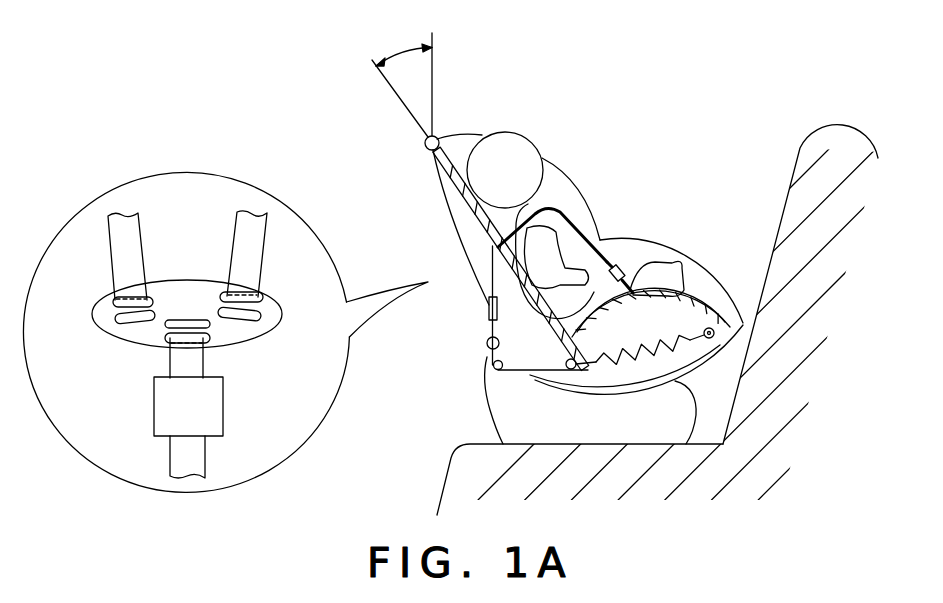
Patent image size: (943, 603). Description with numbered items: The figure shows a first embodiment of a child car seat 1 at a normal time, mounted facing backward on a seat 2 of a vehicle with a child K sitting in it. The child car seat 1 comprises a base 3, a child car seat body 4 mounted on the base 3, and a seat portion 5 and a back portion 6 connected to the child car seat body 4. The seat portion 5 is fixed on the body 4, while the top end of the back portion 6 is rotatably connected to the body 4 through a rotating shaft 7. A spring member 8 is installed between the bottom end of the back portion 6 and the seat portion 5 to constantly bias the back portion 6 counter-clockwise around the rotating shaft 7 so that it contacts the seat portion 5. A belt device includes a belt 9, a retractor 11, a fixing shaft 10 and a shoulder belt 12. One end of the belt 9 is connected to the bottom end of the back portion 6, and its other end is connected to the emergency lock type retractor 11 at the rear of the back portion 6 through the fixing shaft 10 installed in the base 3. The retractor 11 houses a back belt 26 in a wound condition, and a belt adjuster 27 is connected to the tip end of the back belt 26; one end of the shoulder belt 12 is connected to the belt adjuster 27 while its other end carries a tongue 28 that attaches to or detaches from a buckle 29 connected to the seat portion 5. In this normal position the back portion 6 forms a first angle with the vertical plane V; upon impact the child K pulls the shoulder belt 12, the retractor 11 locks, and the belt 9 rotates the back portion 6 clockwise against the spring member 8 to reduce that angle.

The child car seat 1 is at (730, 125).
The seat of a vehicle 2 is at (448, 470).
The base 3 is at (507, 417).
The child car seat body 4 is at (452, 220).
The seat portion 5 is at (712, 330).
The back portion 6 is at (459, 190).
The rotating shaft 7 is at (425, 143).
The spring member 8 is at (672, 332).
The belt 9 is at (193, 462).
The fixing shaft 10 is at (495, 370).
The retractor 11 is at (163, 407).
The shoulder belt 12 is at (570, 197).
The back belt 26 is at (182, 358).
The belt adjuster 27 is at (187, 288).
The tongue 28 is at (618, 258).
The buckle 29 is at (628, 270).
The child K is at (522, 147).
The vertical plane V is at (432, 97).